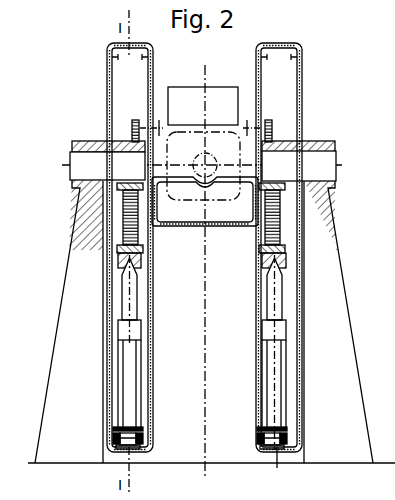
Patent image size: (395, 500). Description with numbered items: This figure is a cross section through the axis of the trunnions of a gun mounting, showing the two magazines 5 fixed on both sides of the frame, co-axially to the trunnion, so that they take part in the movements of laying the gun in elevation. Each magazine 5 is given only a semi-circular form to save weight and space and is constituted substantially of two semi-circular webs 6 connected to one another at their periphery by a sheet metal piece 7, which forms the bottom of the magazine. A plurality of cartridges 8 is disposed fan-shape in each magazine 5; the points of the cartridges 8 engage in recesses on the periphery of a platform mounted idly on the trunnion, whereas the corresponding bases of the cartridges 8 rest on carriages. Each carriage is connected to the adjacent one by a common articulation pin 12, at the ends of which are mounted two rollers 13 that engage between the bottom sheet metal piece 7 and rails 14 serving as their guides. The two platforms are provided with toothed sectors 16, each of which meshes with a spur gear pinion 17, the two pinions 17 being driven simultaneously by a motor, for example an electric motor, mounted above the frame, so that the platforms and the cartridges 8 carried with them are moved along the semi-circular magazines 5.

The magazine 5 is at (121, 289).
The semi-circular web 6 is at (253, 310).
The sheet metal piece 7 is at (121, 455).
The cartridge 8 is at (127, 392).
The articulation pin 12 is at (285, 452).
The roller 13 is at (113, 441).
The rail 14 is at (148, 432).
The toothed sector 16 is at (141, 236).
The spur gear pinion 17 is at (133, 122).